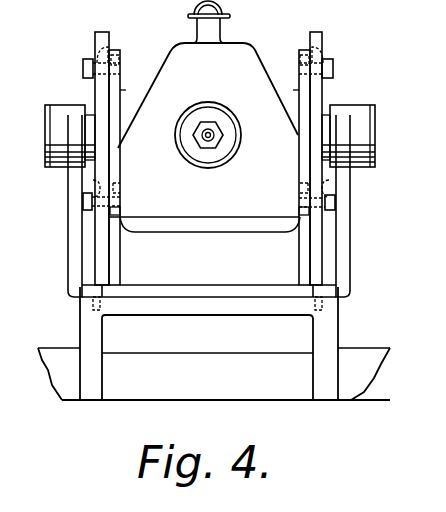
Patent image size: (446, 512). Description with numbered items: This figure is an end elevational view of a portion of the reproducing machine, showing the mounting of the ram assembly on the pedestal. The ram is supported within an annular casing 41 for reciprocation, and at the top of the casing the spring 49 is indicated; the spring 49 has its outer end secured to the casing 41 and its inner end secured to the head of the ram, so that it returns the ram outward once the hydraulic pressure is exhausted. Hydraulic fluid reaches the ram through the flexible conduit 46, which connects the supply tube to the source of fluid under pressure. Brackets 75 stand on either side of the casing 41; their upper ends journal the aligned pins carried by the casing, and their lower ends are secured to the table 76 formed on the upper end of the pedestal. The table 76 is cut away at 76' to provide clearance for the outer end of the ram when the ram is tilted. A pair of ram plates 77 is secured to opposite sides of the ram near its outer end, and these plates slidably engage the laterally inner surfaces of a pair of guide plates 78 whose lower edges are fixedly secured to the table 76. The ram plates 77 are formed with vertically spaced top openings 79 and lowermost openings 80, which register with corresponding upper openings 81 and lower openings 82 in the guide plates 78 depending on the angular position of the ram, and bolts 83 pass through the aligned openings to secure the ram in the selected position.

The annular casing 41 is at (155, 77).
The flexible conduit 46 is at (208, 149).
The spring 49 is at (226, 23).
The brackets 75 is at (68, 243).
The table 76 is at (180, 342).
The cut away portion 76' is at (336, 342).
The ram plates 77 is at (120, 90).
The guide plates 78 is at (110, 257).
The top openings 79 is at (115, 48).
The lowermost openings 80 is at (117, 192).
The upper openings 81 is at (96, 50).
The lower openings 82 is at (92, 187).
The bolts 83 is at (83, 68).